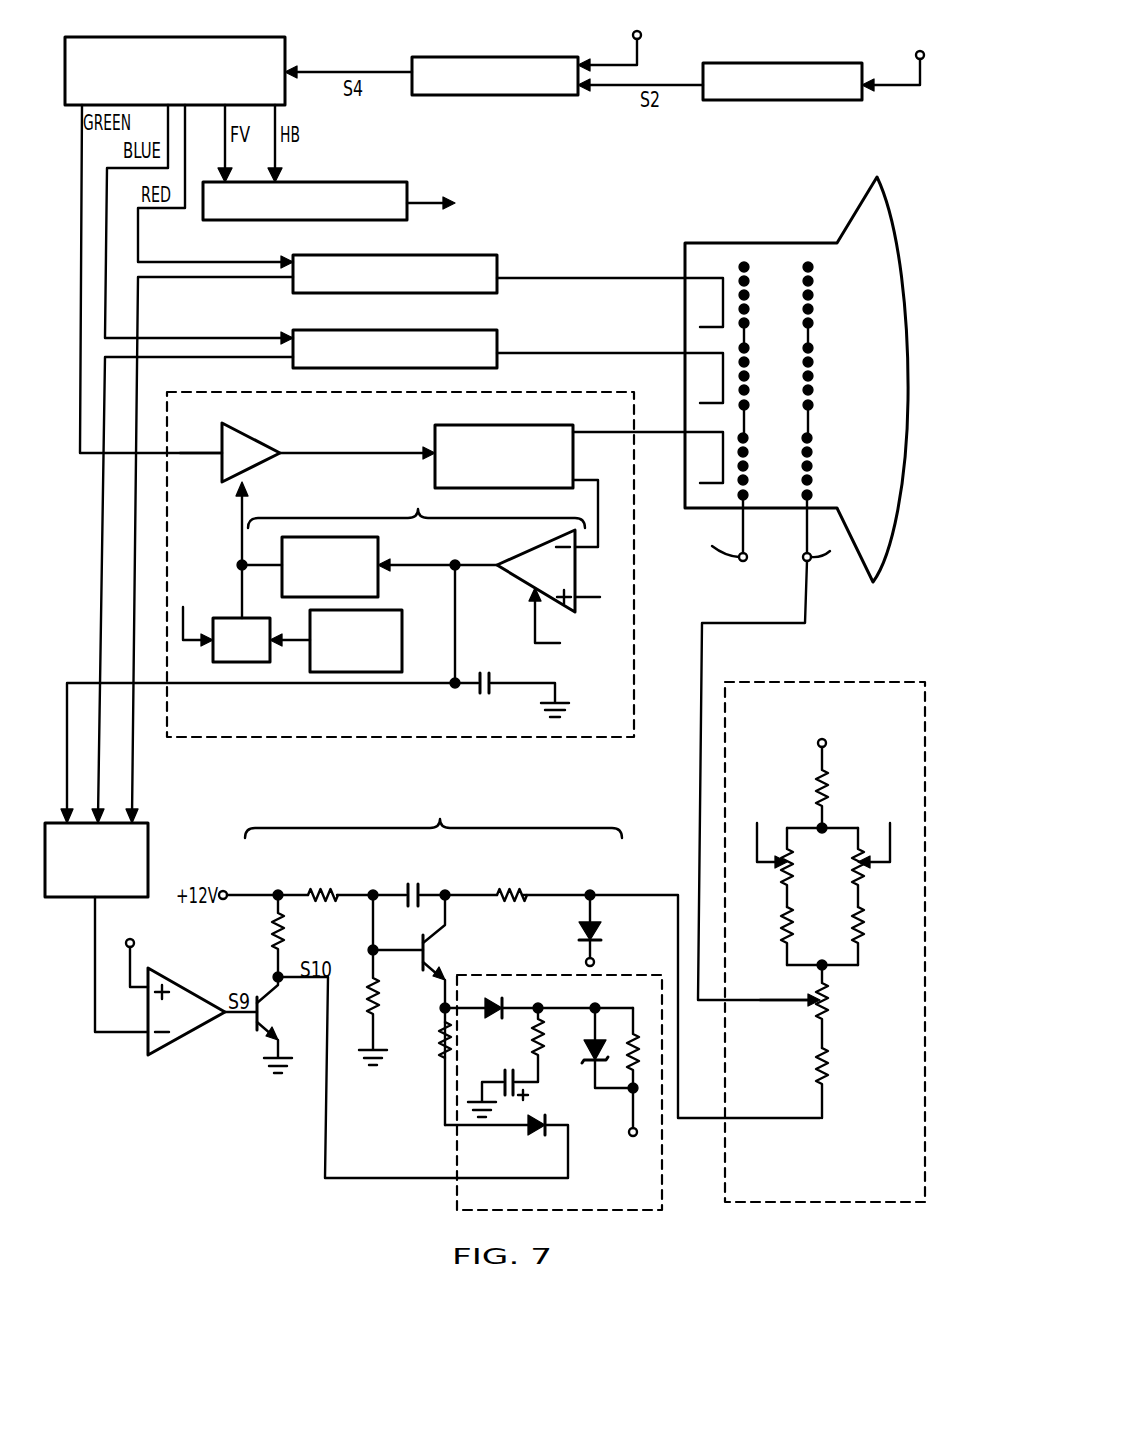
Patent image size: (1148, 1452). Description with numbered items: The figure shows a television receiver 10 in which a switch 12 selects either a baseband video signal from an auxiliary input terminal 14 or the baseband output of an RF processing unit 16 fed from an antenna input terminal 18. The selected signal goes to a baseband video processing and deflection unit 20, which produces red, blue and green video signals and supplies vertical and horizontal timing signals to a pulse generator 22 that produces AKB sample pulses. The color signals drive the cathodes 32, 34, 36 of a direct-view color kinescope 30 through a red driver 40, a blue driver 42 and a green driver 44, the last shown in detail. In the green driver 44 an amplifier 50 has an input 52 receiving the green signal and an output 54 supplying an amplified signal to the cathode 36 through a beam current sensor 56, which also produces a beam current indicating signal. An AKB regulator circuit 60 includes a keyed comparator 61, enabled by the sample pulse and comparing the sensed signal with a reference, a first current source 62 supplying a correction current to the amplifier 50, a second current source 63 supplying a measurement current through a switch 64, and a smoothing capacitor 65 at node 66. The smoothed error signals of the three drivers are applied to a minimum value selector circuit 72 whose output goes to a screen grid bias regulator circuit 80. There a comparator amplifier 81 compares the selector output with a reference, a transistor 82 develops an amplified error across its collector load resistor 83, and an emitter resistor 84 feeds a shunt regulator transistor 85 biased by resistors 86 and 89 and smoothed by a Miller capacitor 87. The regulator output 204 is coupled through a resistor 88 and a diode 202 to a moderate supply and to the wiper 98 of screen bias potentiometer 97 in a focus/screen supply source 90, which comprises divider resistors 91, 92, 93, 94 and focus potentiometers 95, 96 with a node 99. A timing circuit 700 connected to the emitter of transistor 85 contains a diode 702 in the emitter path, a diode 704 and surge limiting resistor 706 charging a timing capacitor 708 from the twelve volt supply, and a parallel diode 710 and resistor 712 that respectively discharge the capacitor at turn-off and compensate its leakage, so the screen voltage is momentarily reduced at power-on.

The television receiver 10 is at (362, 49).
The switch 12 is at (471, 57).
The auxiliary input terminal 14 is at (632, 34).
The RF processing unit 16 is at (790, 63).
The antenna input terminal 18 is at (916, 52).
The baseband video processing and deflection unit 20 is at (151, 37).
The pulse generator 22 is at (316, 182).
The kinescope 30 is at (853, 218).
The cathode 32 is at (668, 278).
The cathode 34 is at (668, 353).
The cathode 36 is at (671, 428).
The red driver 40 is at (321, 255).
The blue driver 42 is at (321, 330).
The green driver 44 is at (284, 392).
The amplifier 50 is at (252, 438).
The input 52 is at (219, 448).
The output 54 is at (270, 462).
The beam current sensor 56 is at (435, 432).
The AKB regulator circuit 60 is at (416, 508).
The keyed comparator 61 is at (555, 582).
The current source 62 is at (378, 541).
The current source 63 is at (402, 612).
The switch 64 is at (218, 662).
The capacitor 65 is at (485, 697).
The node 66 is at (452, 681).
The minimum value selector circuit 72 is at (80, 897).
The screen grid bias regulator circuit 80 is at (433, 814).
The comparator amplifier 81 is at (178, 1038).
The transistor 82 is at (290, 1029).
The collector load resistor 83 is at (276, 948).
The emitter resistor 84 is at (440, 1032).
The transistor 85 is at (460, 959).
The resistor 86 is at (331, 903).
The capacitor 87 is at (414, 909).
The resistor 88 is at (512, 890).
The resistor 89 is at (370, 990).
The focus/screen supply source 90 is at (907, 1198).
The resistor 91 is at (830, 786).
The resistor 92 is at (780, 940).
The resistor 93 is at (865, 938).
The resistor 94 is at (812, 1068).
The potentiometer 95 is at (782, 876).
The potentiometer 96 is at (865, 880).
The screen bias potentiometer 97 is at (828, 1010).
The wiper 98 is at (811, 1007).
The node 99 is at (827, 968).
The diode 202 is at (603, 935).
The output 204 is at (590, 890).
The timing circuit 700 is at (662, 1185).
The diode 702 is at (534, 1133).
The diode 704 is at (498, 1003).
The surge current limiting resistor 706 is at (545, 1052).
The timing capacitor 708 is at (508, 1068).
The diode 710 is at (588, 1062).
The resistor 712 is at (640, 1030).